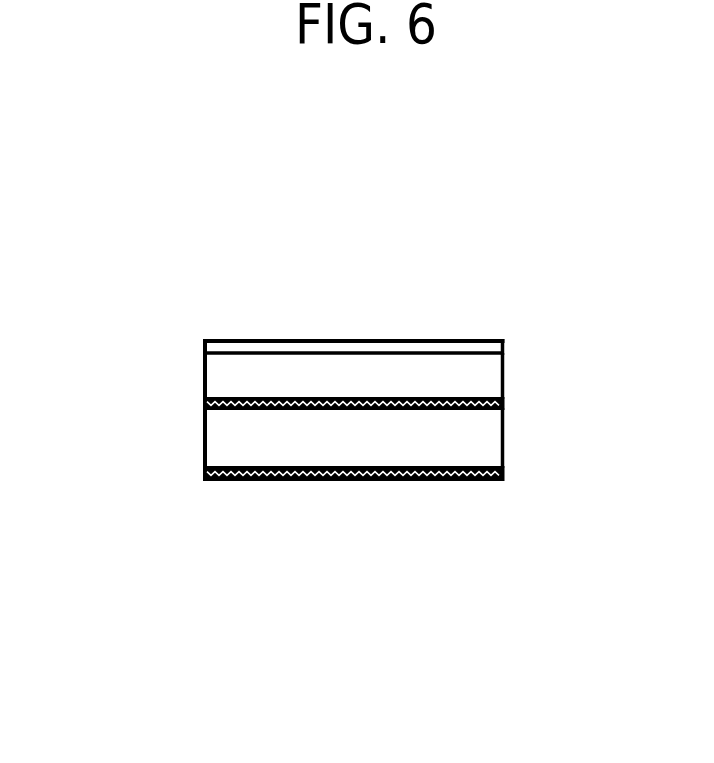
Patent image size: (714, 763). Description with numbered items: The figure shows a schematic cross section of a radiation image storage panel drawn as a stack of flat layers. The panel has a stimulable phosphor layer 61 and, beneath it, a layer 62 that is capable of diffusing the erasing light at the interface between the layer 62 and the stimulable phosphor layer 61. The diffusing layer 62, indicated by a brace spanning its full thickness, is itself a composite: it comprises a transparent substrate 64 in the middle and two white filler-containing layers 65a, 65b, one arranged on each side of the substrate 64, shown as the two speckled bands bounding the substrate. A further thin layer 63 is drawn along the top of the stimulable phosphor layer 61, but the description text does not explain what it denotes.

The stimulable phosphor layer 61 is at (503, 370).
The diffusing layer 62 is at (322, 461).
The protective layer 63 is at (467, 341).
The transparent substrate 64 is at (205, 430).
The white filler-containing layer 65a is at (205, 402).
The white filler-containing layer 65b is at (205, 482).